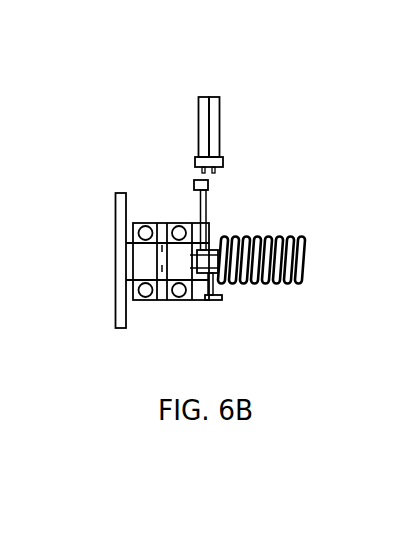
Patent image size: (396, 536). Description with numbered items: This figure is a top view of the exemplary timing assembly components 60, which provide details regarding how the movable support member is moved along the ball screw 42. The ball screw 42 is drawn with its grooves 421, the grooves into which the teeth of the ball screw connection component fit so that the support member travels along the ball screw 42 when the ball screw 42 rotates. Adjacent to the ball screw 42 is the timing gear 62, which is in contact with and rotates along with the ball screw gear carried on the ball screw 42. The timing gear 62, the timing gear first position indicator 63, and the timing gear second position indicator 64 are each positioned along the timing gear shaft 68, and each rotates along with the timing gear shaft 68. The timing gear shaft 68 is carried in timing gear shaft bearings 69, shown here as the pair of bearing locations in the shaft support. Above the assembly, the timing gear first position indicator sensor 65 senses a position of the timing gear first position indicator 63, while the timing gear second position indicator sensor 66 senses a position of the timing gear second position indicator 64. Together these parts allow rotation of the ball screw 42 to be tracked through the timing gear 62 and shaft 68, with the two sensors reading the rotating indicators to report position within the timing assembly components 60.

The timing assembly components 60 is at (211, 77).
The timing gear first position indicator sensor 65 is at (198, 145).
The timing gear second position indicator sensor 66 is at (220, 145).
The timing gear first position indicator 63 is at (207, 206).
The timing gear second position indicator 64 is at (213, 300).
The timing gear 62 is at (123, 221).
The timing gear shaft 68 is at (130, 262).
The timing gear shaft bearings 69 is at (146, 290).
The ball screw 42 is at (272, 238).
The grooves 421 is at (288, 282).